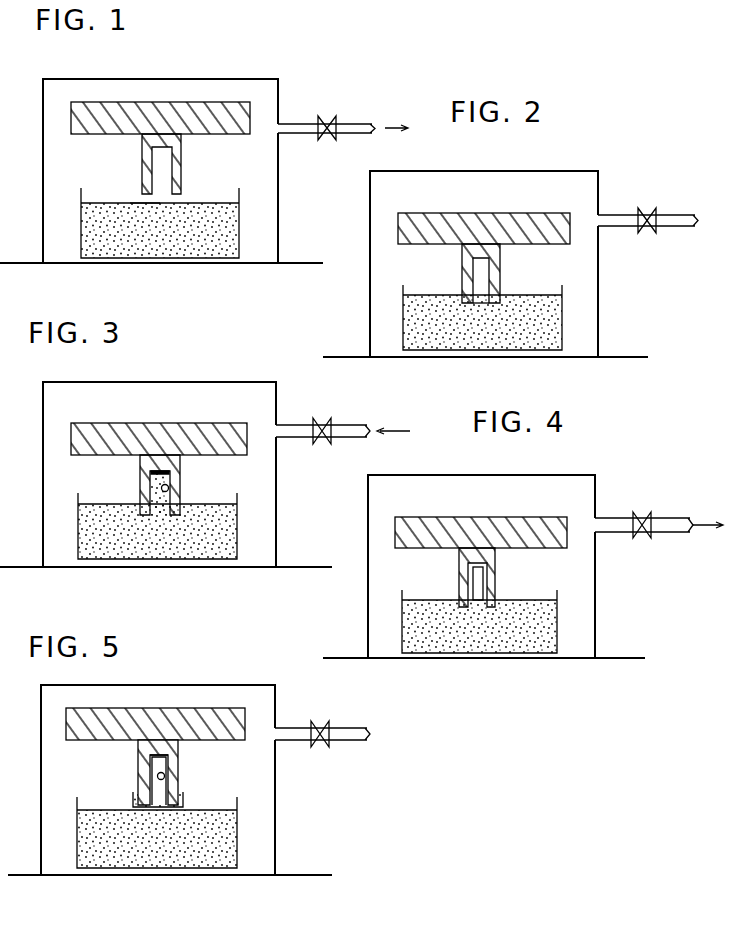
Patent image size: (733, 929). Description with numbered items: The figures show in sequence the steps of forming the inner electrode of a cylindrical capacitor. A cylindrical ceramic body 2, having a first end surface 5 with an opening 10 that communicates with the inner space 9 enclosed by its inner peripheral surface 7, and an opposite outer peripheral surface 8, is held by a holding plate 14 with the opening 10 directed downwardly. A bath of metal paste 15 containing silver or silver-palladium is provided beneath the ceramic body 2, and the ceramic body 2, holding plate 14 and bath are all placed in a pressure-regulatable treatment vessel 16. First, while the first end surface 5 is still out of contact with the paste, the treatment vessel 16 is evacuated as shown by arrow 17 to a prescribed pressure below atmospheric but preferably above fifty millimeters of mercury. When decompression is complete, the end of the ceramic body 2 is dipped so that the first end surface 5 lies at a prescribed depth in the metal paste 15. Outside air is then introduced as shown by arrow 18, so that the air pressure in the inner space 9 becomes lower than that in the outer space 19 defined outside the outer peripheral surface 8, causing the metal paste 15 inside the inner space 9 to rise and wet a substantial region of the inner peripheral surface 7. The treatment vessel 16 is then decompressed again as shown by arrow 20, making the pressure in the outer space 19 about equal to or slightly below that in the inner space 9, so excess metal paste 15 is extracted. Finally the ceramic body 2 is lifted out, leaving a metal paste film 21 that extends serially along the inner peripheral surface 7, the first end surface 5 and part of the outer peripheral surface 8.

In FIG. 1, the cylindrical ceramic body 2 is at (190, 157).
In FIG. 2, the cylindrical ceramic body 2 is at (506, 259).
In FIG. 3, the cylindrical ceramic body 2 is at (200, 470).
In FIG. 4, the cylindrical ceramic body 2 is at (510, 558).
In FIG. 5, the cylindrical ceramic body 2 is at (195, 763).
In FIG. 1, the first end surface 5 is at (178, 203).
In FIG. 2, the first end surface 5 is at (467, 312).
In FIG. 3, the first end surface 5 is at (157, 531).
In FIG. 4, the first end surface 5 is at (479, 626).
In FIG. 5, the first end surface 5 is at (180, 810).
In FIG. 3, the inner peripheral surface 7 is at (168, 489).
In FIG. 5, the inner peripheral surface 7 is at (173, 785).
In FIG. 5, the outer peripheral surface 8 is at (138, 763).
In FIG. 3, the inner space 9 is at (157, 484).
In FIG. 4, the inner space 9 is at (477, 583).
In FIG. 1, the opening 10 is at (160, 203).
In FIG. 2, the opening 10 is at (483, 303).
In FIG. 1, the holding plate 14 is at (250, 133).
In FIG. 2, the holding plate 14 is at (562, 243).
In FIG. 3, the holding plate 14 is at (245, 455).
In FIG. 4, the holding plate 14 is at (553, 548).
In FIG. 5, the holding plate 14 is at (230, 735).
In FIG. 1, the metal paste 15 is at (217, 210).
In FIG. 2, the metal paste 15 is at (533, 302).
In FIG. 3, the metal paste 15 is at (228, 512).
In FIG. 4, the metal paste 15 is at (527, 605).
In FIG. 5, the metal paste 15 is at (218, 812).
In FIG. 1, the treatment vessel 16 is at (262, 79).
In FIG. 2, the treatment vessel 16 is at (563, 171).
In FIG. 3, the treatment vessel 16 is at (235, 382).
In FIG. 4, the treatment vessel 16 is at (563, 475).
In FIG. 5, the treatment vessel 16 is at (242, 685).
In FIG. 1, the arrow indicating evacuation 17 is at (384, 126).
In FIG. 3, the arrow indicating introduction of outside air 18 is at (402, 427).
In FIG. 3, the outer space 19 is at (70, 479).
In FIG. 4, the outer space 19 is at (380, 581).
In FIG. 4, the arrow indicating second decompression 20 is at (708, 524).
In FIG. 5, the metal paste film 21 is at (134, 796).